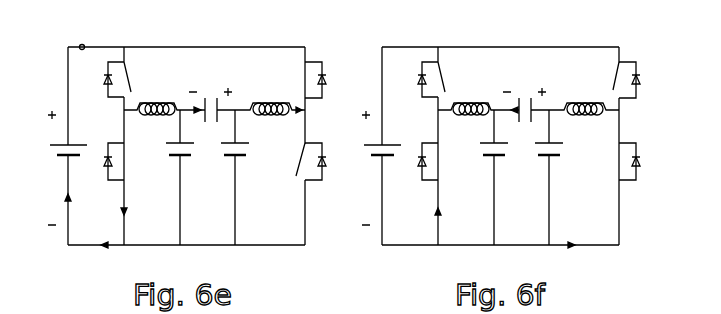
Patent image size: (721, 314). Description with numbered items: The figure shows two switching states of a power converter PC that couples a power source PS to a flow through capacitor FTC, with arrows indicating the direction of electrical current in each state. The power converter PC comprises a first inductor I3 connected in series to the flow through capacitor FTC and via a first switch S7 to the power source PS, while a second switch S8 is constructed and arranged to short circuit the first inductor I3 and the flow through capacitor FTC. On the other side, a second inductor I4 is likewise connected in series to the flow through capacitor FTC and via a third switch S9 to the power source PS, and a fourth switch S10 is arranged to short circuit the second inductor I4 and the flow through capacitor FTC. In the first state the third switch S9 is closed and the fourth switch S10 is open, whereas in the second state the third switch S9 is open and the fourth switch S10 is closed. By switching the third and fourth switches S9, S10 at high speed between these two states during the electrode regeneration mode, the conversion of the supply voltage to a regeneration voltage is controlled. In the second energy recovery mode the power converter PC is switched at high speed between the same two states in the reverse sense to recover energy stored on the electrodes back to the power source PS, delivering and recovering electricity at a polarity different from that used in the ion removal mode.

In FIG. 6E, the power converter PC is at (79, 256).
In FIG. 6F, the power converter PC is at (393, 256).
In FIG. 6E, the power source PS is at (66, 158).
In FIG. 6F, the power source PS is at (380, 158).
In FIG. 6E, the first switch S7 is at (128, 60).
In FIG. 6F, the first switch S7 is at (442, 60).
In FIG. 6E, the second switch S8 is at (125, 135).
In FIG. 6F, the second switch S8 is at (439, 135).
In FIG. 6E, the third switch S9 is at (309, 60).
In FIG. 6F, the third switch S9 is at (623, 60).
In FIG. 6E, the fourth switch S10 is at (308, 147).
In FIG. 6F, the fourth switch S10 is at (622, 147).
In FIG. 6E, the first inductor I3 is at (151, 100).
In FIG. 6F, the first inductor I3 is at (465, 100).
In FIG. 6E, the second inductor I4 is at (259, 100).
In FIG. 6F, the second inductor I4 is at (573, 100).
In FIG. 6E, the flow through capacitor FTC is at (208, 92).
In FIG. 6F, the flow through capacitor FTC is at (522, 92).